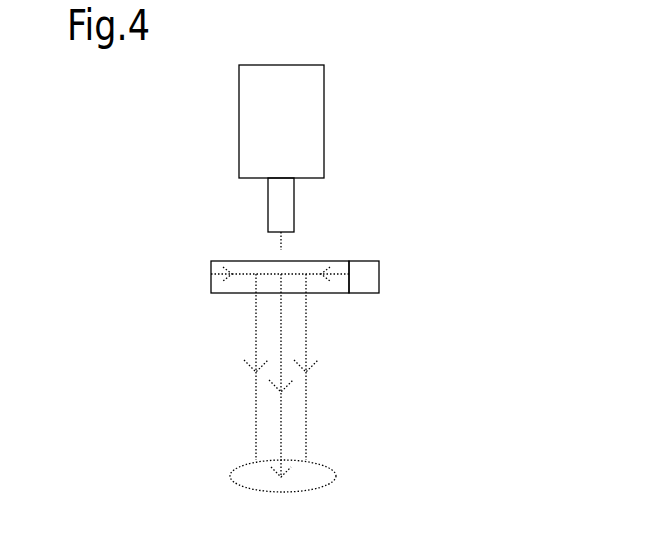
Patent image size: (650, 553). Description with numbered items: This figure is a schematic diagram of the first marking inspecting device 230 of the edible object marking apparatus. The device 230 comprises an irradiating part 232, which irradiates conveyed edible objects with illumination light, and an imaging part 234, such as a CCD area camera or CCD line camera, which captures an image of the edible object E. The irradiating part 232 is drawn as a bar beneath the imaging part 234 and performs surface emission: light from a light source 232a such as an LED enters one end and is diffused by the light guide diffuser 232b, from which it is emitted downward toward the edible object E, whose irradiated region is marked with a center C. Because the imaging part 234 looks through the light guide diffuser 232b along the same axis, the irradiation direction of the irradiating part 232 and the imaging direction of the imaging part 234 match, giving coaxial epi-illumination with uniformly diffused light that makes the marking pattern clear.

The first marking inspecting device 230 is at (150, 230).
The imaging part 234 is at (300, 133).
The irradiating part 232 is at (382, 272).
The light source 232a is at (363, 284).
The light guide diffuser 232b is at (212, 282).
The irradiation center C is at (272, 468).
The edible object E is at (322, 478).